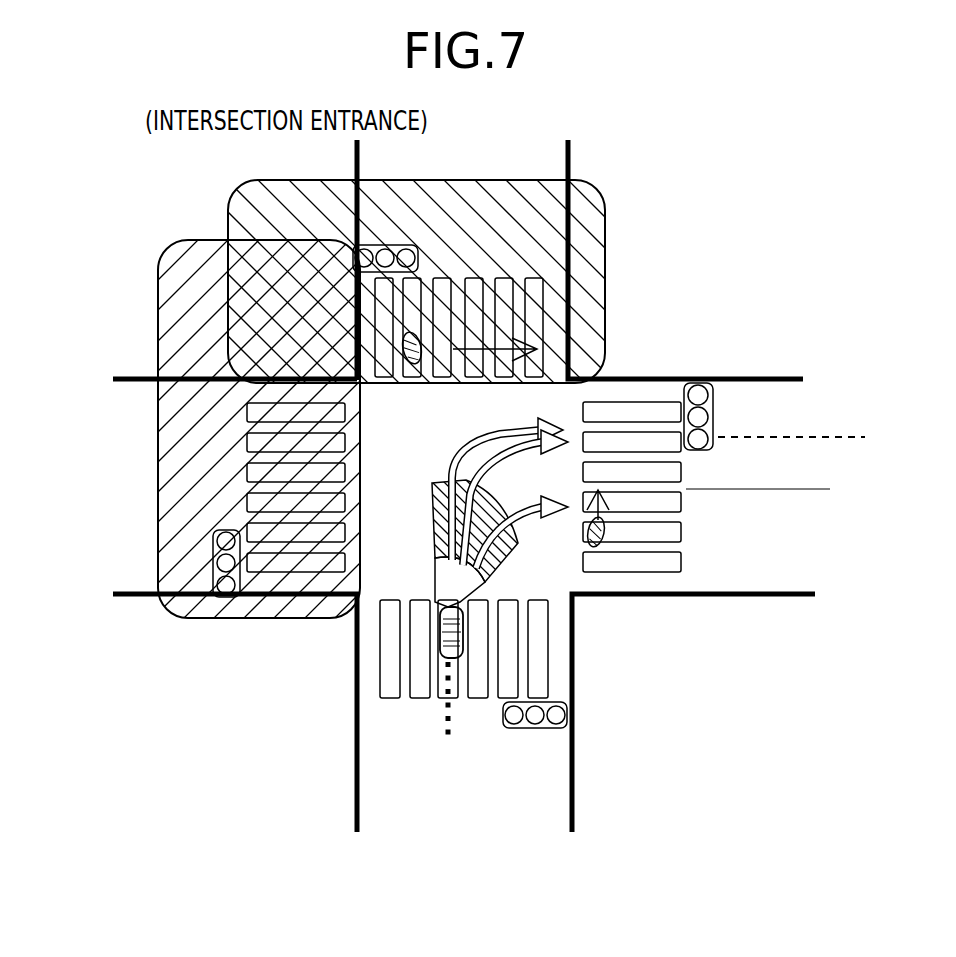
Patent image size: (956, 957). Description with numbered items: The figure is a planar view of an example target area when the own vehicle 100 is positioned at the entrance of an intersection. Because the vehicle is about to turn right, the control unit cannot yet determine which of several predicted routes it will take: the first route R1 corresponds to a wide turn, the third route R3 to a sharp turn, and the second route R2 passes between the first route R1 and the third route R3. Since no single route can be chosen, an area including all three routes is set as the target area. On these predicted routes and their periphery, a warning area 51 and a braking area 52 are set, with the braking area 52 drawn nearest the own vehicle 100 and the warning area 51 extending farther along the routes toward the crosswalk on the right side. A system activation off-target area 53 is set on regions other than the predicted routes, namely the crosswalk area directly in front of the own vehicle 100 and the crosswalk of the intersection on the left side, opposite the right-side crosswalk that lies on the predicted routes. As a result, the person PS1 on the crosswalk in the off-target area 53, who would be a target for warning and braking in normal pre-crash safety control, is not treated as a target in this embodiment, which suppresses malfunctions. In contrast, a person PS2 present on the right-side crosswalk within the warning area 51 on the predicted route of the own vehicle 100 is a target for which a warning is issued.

The system activation off-target area 53 is at (228, 208).
The warning area 51 is at (438, 517).
The braking area 52 is at (445, 587).
The own vehicle 100 is at (462, 648).
The first route R1 is at (487, 440).
The second route R2 is at (497, 477).
The third route R3 is at (523, 522).
The person PS1 is at (419, 337).
The person PS2 is at (599, 513).